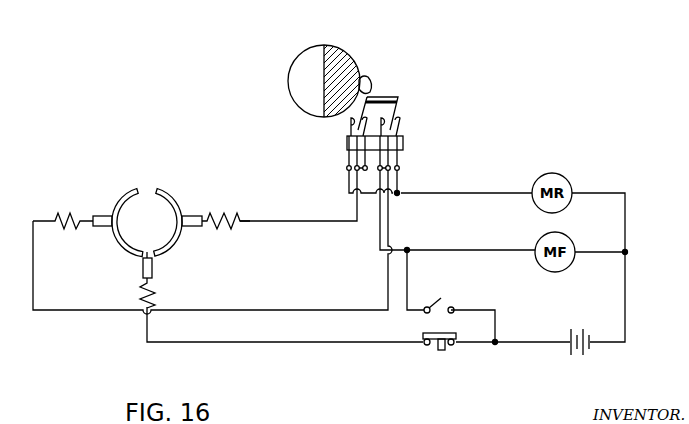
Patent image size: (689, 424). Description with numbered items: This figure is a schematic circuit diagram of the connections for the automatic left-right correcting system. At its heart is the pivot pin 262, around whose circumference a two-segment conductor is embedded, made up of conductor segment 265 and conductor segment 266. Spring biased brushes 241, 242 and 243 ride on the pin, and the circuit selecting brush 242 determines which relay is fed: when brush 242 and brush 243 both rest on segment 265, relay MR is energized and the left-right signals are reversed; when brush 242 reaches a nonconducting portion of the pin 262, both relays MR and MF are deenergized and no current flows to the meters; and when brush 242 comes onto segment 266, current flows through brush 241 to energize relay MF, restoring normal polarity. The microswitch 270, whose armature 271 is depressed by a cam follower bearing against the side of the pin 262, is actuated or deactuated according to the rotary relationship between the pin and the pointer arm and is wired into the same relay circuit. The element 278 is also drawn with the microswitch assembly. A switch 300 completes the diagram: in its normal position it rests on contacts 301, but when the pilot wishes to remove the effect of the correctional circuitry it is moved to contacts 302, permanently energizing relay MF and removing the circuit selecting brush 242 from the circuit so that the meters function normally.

The pivot pin 262 is at (332, 45).
The pivot 278 is at (370, 79).
The armature 271 is at (398, 96).
The microswitch 270 is at (415, 113).
The conductor segment 265 is at (138, 187).
The conductor segment 266 is at (157, 186).
The spring biased brush 243 is at (107, 216).
The spring biased brush 241 is at (194, 216).
The circuit selecting brush 242 is at (153, 270).
The contacts 302 is at (451, 307).
The switch 300 is at (424, 353).
The contacts 301 is at (427, 345).